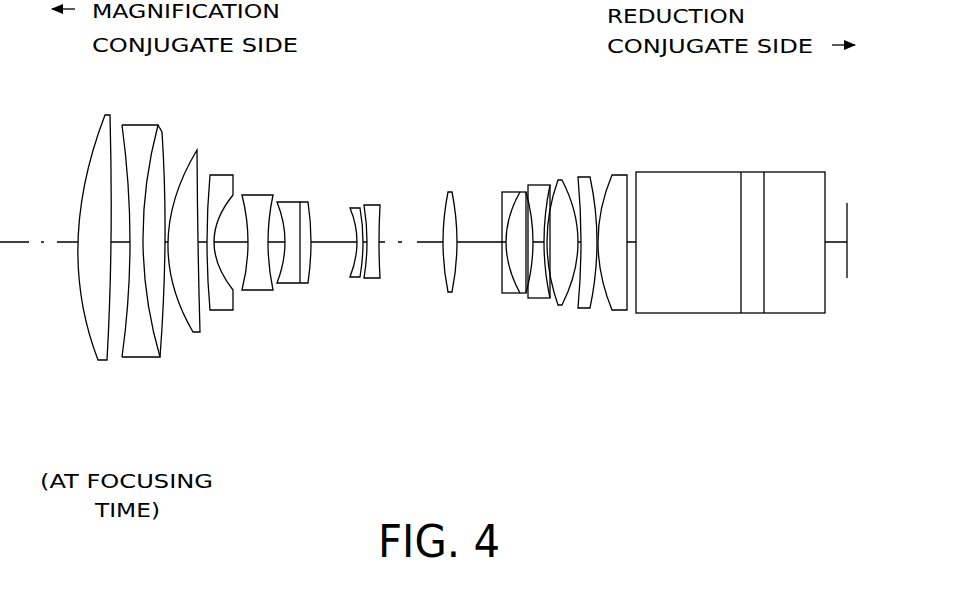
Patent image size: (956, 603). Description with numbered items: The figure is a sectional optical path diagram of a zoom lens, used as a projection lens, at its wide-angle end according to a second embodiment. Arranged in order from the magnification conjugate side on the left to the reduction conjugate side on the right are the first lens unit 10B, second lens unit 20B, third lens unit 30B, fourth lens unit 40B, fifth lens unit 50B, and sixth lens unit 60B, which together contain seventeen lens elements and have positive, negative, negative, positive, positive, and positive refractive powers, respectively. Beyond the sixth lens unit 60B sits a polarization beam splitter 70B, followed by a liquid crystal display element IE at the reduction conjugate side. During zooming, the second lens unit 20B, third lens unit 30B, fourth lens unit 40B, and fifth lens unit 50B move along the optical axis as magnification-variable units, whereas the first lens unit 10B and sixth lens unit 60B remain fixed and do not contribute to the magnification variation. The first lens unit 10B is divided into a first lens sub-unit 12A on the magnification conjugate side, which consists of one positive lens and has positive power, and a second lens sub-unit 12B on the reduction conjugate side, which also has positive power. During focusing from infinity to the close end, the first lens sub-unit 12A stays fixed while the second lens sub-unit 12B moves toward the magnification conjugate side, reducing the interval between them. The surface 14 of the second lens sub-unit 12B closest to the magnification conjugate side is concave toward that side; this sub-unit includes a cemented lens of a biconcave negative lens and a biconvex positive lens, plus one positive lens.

The first lens unit 10B is at (78, 103).
The first lens sub-unit 12A is at (87, 373).
The second lens sub-unit 12B is at (125, 373).
The surface 14 is at (125, 180).
The second lens unit 20B is at (318, 343).
The third lens unit 30B is at (335, 448).
The fourth lens unit 40B is at (373, 448).
The fifth lens unit 50B is at (422, 448).
The sixth lens unit 60B is at (628, 442).
The polarization beam splitter 70B is at (691, 292).
The liquid crystal display element IE is at (847, 260).